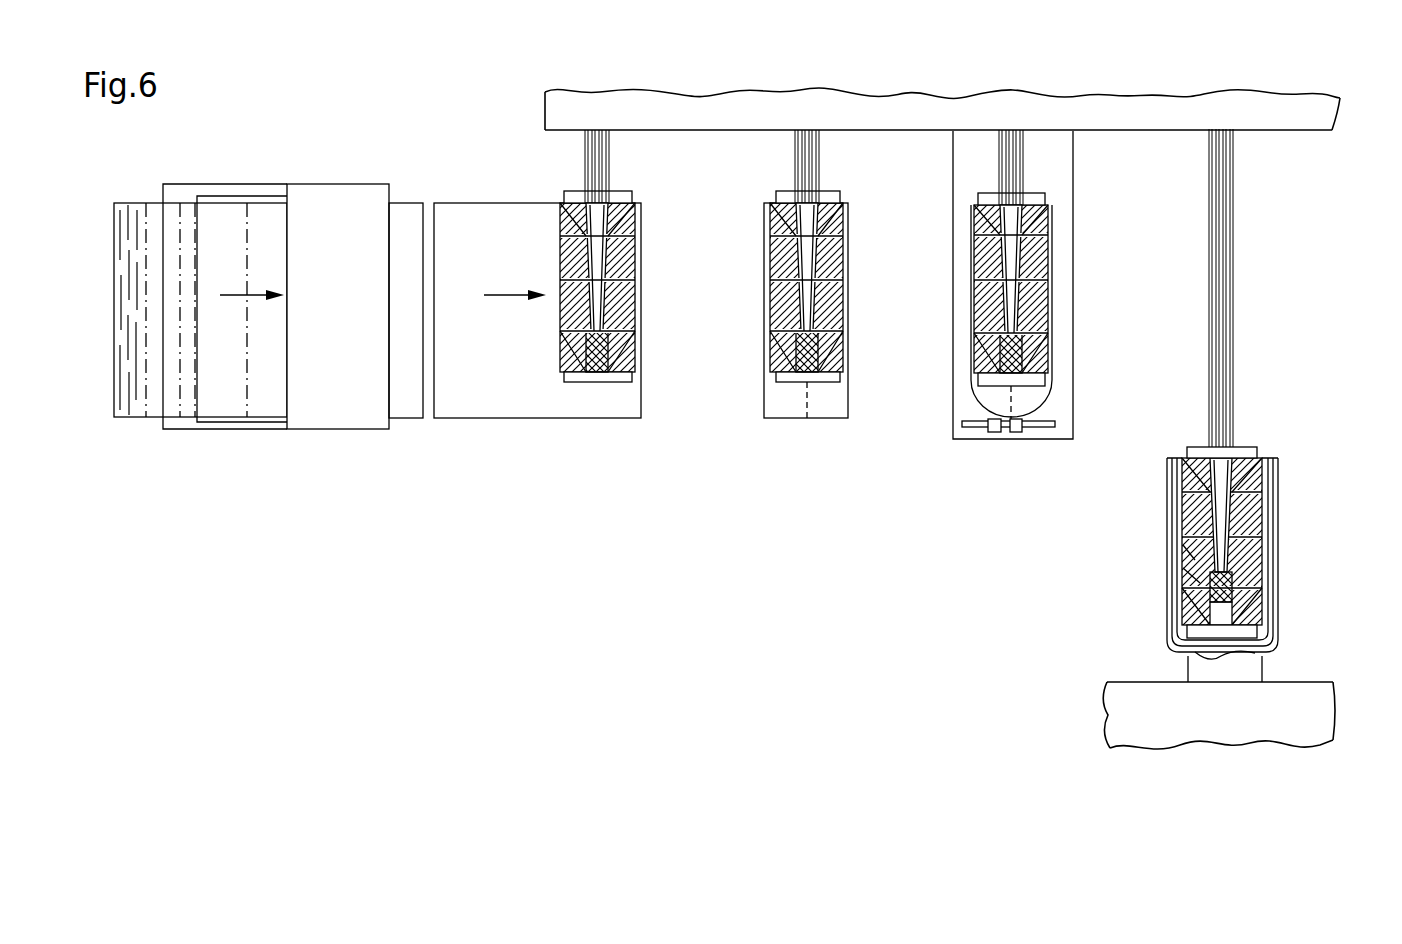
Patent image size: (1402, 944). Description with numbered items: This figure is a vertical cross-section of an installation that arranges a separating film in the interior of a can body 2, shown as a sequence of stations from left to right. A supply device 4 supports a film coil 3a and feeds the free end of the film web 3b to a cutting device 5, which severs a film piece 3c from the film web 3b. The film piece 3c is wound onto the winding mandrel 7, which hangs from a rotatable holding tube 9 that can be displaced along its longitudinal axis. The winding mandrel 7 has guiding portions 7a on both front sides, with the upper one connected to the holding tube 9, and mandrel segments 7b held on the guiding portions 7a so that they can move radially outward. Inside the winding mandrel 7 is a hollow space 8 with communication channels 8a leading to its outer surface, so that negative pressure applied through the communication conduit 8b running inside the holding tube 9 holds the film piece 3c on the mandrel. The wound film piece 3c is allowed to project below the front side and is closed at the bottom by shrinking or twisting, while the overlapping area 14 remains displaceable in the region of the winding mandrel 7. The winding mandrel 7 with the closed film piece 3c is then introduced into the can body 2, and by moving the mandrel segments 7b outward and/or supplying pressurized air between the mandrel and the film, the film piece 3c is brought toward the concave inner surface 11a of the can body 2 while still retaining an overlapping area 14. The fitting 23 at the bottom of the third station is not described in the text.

The can body 2 is at (1282, 538).
The film coil 3a is at (134, 420).
The film web 3b is at (264, 424).
The film piece 3c is at (502, 424).
The supply device 4 is at (216, 180).
The cutting device 5 is at (343, 180).
The winding mandrel 7 is at (552, 183).
The guiding portions 7a is at (1246, 437).
The mandrel segments 7b is at (1248, 518).
The hollow space 8 is at (1226, 513).
The communication channels 8a is at (1184, 560).
The communication conduit 8b is at (1218, 290).
The holding tube 9 is at (612, 167).
The concave inner surface 11a is at (1255, 581).
The overlapping area 14 is at (805, 426).
The connector 23 is at (985, 437).